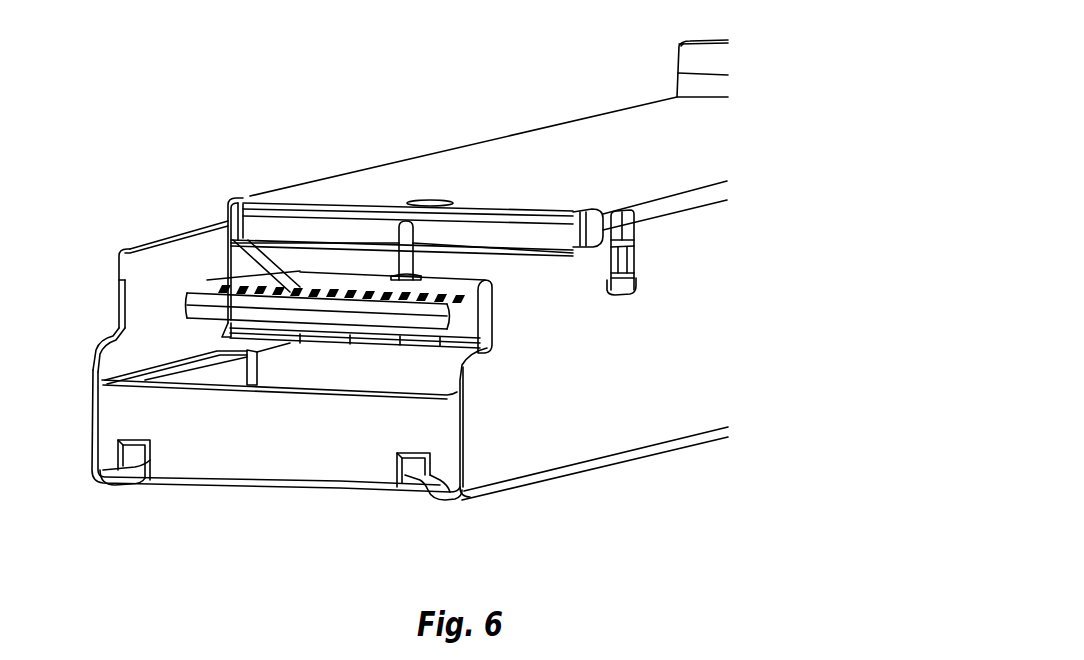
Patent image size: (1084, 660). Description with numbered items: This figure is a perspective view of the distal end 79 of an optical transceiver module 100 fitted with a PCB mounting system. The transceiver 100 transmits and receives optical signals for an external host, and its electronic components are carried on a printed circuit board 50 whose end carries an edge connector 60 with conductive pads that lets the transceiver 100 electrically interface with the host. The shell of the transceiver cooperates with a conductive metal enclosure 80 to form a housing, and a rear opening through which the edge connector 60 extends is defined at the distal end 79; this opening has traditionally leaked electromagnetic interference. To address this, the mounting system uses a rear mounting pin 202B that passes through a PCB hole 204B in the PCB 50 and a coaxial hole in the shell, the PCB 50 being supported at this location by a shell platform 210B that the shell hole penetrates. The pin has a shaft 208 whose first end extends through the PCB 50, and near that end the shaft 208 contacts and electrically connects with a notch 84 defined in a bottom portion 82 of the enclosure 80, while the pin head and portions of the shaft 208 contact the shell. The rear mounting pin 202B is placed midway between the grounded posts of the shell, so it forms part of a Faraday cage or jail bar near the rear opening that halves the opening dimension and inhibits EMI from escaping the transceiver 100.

The optical transceiver module 100 is at (251, 148).
The printed circuit board 50 is at (308, 257).
The edge connector 60 is at (205, 297).
The distal end 79 is at (275, 413).
The enclosure 80 is at (679, 356).
The bottom portion 82 is at (628, 128).
The notch 84 is at (415, 275).
The rear mounting pin 202B is at (383, 233).
The PCB hole 204B is at (450, 280).
The shaft 208 is at (420, 273).
The shell platform 210B is at (428, 363).